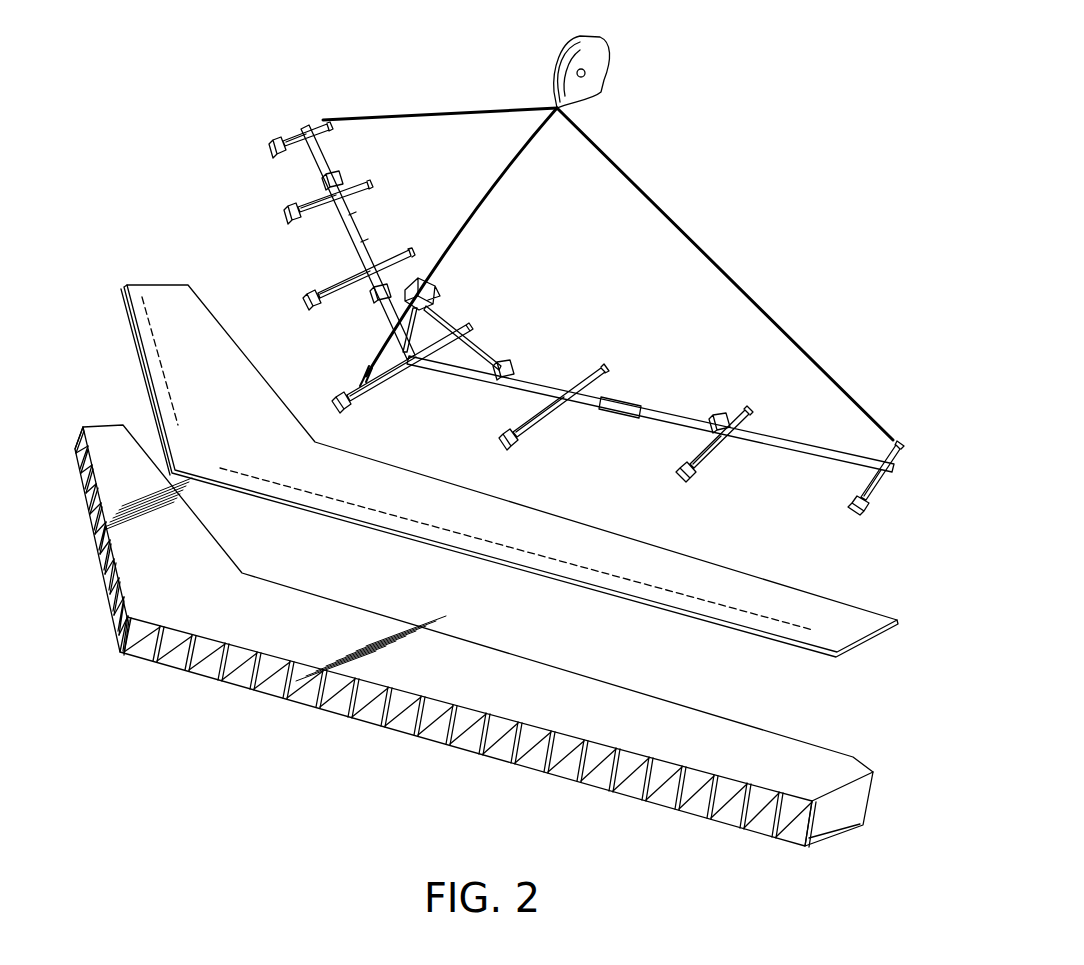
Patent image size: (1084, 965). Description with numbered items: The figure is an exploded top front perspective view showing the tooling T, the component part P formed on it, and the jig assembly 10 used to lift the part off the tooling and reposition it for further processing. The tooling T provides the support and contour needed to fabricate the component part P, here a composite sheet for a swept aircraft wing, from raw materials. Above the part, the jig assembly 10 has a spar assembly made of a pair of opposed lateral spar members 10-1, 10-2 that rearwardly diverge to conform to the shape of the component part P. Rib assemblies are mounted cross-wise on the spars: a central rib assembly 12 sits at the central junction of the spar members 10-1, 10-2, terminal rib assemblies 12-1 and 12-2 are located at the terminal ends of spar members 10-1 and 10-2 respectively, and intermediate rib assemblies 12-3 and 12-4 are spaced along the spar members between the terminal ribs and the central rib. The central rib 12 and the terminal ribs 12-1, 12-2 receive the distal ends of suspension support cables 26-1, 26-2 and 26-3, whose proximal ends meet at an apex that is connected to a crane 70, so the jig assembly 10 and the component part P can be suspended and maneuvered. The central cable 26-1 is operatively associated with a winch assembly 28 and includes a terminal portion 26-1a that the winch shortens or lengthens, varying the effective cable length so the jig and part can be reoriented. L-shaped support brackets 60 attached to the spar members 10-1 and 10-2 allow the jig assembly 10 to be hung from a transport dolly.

The jig assembly 10 is at (233, 152).
The lateral spar member 10-1 is at (665, 420).
The lateral spar member 10-2 is at (367, 247).
The central rib assembly 12 is at (400, 402).
The terminal rib assembly 12-1 is at (887, 498).
The terminal rib assembly 12-2 is at (290, 123).
The intermediate rib assembly 12-3 is at (570, 428).
The intermediate rib assembly 12-4 is at (367, 175).
The central support cable 26-1 is at (419, 247).
The terminal portion of central cable 26-1a is at (378, 343).
The suspension support cable 26-2 is at (508, 118).
The suspension support cable 26-3 is at (693, 250).
The winch assembly 28 is at (422, 290).
The L-shaped support bracket 60 is at (333, 178).
The crane 70 is at (596, 66).
The component part P is at (509, 471).
The tooling T is at (474, 636).